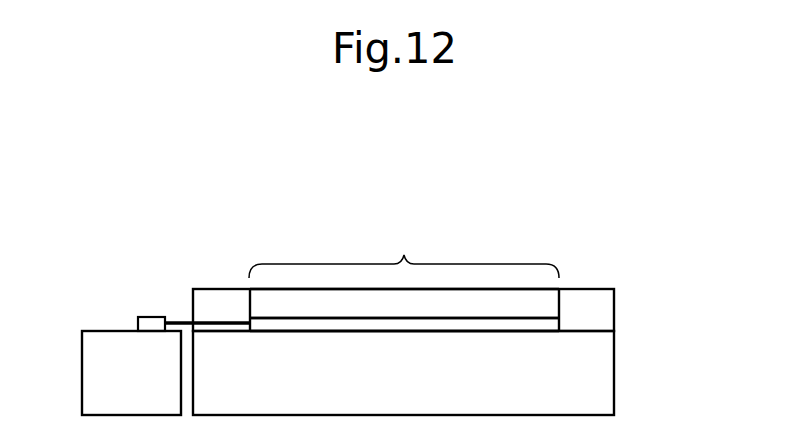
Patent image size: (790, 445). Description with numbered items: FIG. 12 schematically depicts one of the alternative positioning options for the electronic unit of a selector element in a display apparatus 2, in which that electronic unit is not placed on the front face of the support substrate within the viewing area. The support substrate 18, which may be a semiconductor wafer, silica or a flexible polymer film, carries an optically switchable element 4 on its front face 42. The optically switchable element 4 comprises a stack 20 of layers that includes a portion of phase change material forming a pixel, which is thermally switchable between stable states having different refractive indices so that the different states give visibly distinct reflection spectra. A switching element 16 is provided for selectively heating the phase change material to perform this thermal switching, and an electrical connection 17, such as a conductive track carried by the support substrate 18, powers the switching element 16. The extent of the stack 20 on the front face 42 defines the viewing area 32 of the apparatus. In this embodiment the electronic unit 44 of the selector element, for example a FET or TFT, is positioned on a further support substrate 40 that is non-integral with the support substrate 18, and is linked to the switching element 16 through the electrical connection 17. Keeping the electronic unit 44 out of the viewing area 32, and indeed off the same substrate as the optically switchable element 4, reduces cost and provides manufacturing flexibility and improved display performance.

The device 2 is at (622, 176).
The optically switchable element 4 is at (458, 177).
The switching element 16 is at (457, 325).
The electrical connection 17 is at (225, 327).
The support substrate 18 is at (397, 386).
The stack of layers 20 is at (333, 302).
The viewing area 32 is at (392, 246).
The further support substrate 40 is at (121, 385).
The front face 42 is at (510, 330).
The electronic unit 44 is at (152, 325).